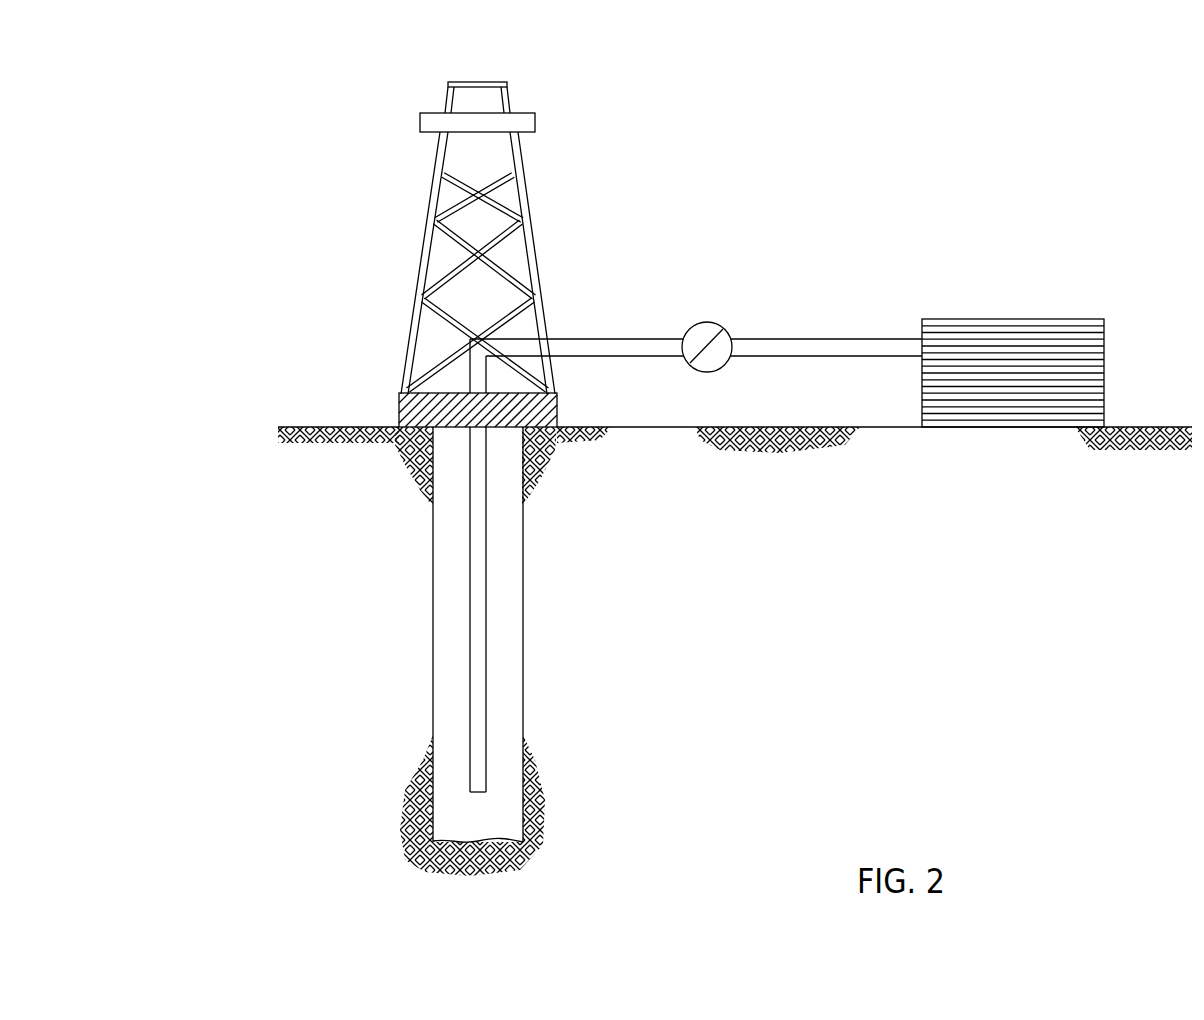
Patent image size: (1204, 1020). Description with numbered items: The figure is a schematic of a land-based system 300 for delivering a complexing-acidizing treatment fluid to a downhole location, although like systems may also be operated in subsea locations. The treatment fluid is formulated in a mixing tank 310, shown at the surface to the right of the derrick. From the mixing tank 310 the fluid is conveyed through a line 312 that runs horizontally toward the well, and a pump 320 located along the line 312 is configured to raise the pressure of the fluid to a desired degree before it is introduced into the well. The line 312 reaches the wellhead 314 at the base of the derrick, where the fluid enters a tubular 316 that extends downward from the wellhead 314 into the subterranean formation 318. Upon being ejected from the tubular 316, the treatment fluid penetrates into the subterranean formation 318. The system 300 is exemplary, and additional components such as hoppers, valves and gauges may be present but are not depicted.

The system 300 is at (270, 86).
The mixing tank 310 is at (1080, 323).
The line 312 is at (617, 338).
The wellhead 314 is at (399, 412).
The tubular 316 is at (485, 553).
The subterranean formation 318 is at (360, 642).
The pump 320 is at (721, 328).